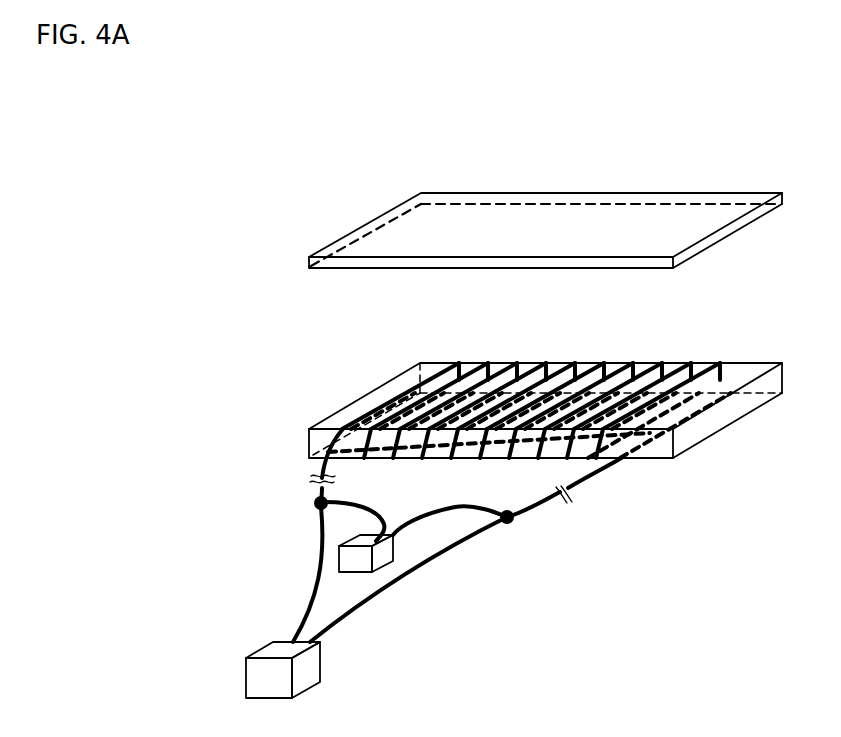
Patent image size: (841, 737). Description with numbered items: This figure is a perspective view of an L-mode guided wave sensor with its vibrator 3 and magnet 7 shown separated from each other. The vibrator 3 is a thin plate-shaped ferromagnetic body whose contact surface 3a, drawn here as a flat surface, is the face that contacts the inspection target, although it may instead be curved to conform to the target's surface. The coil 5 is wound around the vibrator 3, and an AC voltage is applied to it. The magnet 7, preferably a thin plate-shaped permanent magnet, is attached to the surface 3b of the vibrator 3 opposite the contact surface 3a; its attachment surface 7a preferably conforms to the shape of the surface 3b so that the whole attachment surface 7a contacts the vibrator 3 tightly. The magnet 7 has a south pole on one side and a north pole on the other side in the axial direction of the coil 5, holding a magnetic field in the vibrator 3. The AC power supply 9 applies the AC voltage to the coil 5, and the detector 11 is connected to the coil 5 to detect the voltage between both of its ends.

The magnet 7 is at (545, 257).
The attachment surface 7a is at (626, 270).
The vibrator 3 is at (545, 430).
The contact surface 3a is at (642, 460).
The surface opposite to the contact surface 3b is at (729, 364).
The coil 5 is at (459, 453).
The AC power supply 9 is at (308, 668).
The detector 11 is at (385, 550).